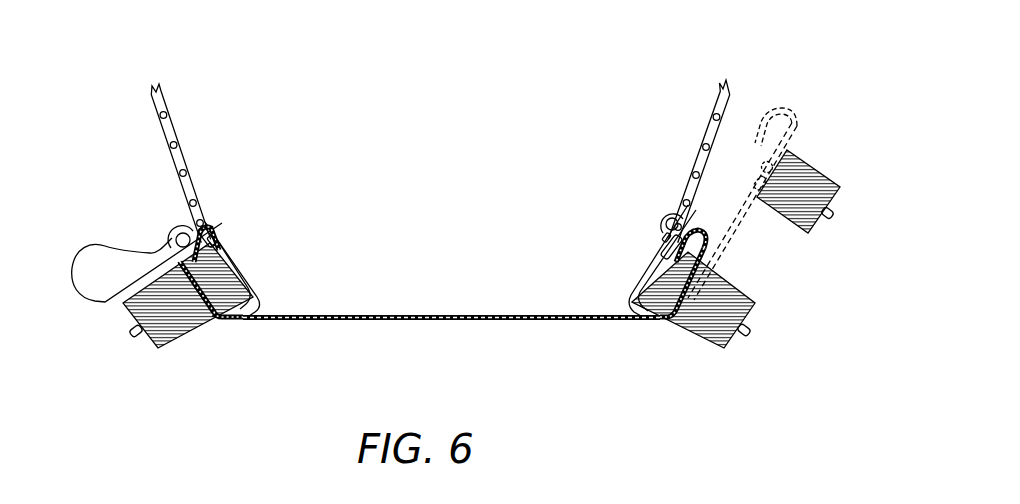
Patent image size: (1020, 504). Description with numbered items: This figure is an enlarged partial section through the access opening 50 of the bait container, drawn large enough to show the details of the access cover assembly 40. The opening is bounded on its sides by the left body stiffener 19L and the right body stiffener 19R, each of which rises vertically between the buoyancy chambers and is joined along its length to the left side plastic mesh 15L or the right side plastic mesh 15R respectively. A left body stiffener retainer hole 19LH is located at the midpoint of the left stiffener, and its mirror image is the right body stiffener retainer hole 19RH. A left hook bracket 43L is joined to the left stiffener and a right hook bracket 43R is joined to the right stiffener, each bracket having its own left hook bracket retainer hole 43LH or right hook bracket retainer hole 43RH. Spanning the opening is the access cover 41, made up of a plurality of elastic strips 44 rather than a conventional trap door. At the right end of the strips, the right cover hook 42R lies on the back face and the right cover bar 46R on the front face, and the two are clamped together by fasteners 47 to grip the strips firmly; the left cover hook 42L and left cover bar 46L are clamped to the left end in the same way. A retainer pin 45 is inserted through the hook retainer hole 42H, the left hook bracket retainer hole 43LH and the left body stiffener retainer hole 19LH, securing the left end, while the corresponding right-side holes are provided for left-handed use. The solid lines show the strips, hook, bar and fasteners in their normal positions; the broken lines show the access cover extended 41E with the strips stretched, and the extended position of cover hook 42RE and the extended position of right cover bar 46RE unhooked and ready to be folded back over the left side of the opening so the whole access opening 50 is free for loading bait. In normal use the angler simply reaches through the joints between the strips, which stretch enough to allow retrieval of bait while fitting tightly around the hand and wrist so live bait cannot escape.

The left side plastic mesh 15L is at (171, 122).
The right side plastic mesh 15R is at (718, 120).
The left cover hook 42L is at (202, 223).
The right cover hook 42R is at (677, 227).
The hook retainer hole 42H is at (207, 230).
The extended position of cover hook 42RE is at (778, 110).
The left body stiffener 19L is at (243, 280).
The right body stiffener 19R is at (635, 273).
The left body stiffener retainer hole 19LH is at (213, 237).
The right body stiffener retainer hole 19RH is at (667, 237).
The left hook bracket 43L is at (248, 317).
The right hook bracket 43R is at (630, 318).
The left hook bracket retainer hole 43LH is at (228, 246).
The right hook bracket retainer hole 43RH is at (663, 247).
The elastic strips 44 is at (390, 322).
The retainer pin 45 is at (178, 260).
The left cover bar 46L is at (183, 332).
The right cover bar 46R is at (700, 338).
The extended position of right cover bar 46RE is at (770, 207).
The fastener 47 is at (135, 333).
The access cover 41 is at (230, 320).
The access cover extended 41E is at (750, 197).
The access opening 50 is at (623, 295).
The access cover assembly 40 is at (502, 322).